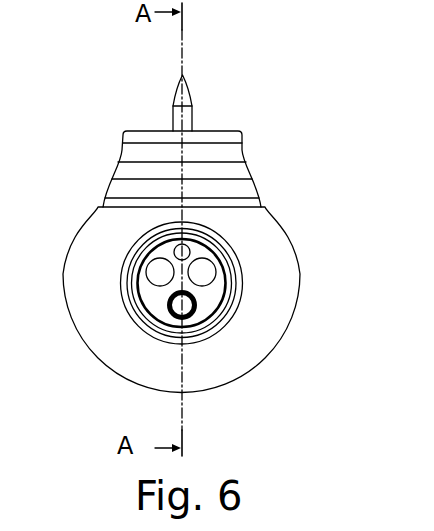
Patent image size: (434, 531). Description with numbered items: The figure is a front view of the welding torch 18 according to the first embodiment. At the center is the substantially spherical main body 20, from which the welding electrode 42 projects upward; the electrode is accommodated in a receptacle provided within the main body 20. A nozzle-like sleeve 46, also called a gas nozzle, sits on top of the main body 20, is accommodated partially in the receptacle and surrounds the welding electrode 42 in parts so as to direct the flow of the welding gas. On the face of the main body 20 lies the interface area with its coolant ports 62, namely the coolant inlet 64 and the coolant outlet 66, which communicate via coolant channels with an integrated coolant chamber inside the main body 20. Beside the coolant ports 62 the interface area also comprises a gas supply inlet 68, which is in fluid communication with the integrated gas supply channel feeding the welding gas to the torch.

The welding torch 18 is at (97, 99).
The substantially spherical main body 20 is at (108, 343).
The welding electrode 42 is at (192, 117).
The nozzle-like sleeve 46 is at (235, 157).
The coolant port 62 is at (134, 250).
The coolant inlet 64 is at (157, 273).
The coolant outlet 66 is at (205, 270).
The gas supply inlet 68 is at (196, 305).